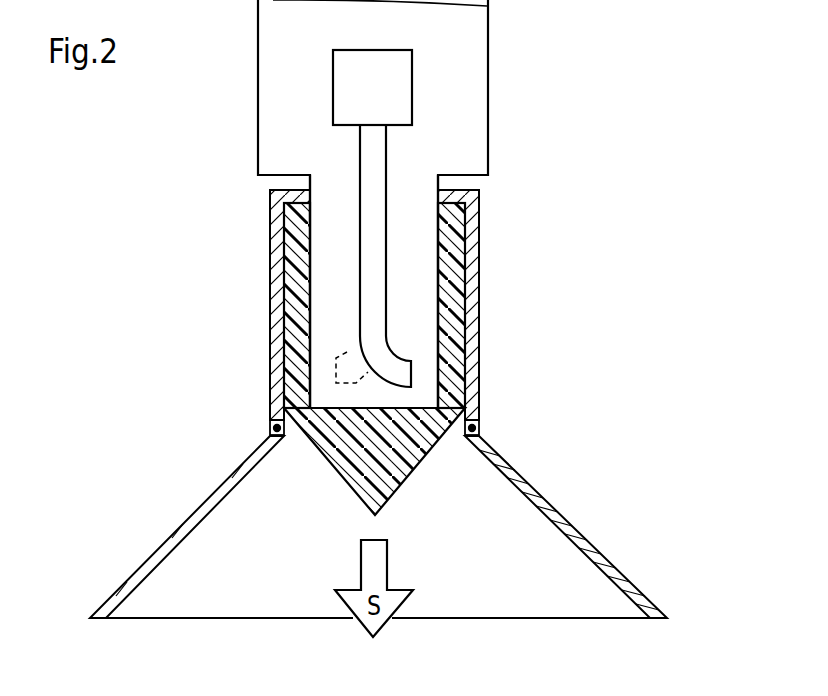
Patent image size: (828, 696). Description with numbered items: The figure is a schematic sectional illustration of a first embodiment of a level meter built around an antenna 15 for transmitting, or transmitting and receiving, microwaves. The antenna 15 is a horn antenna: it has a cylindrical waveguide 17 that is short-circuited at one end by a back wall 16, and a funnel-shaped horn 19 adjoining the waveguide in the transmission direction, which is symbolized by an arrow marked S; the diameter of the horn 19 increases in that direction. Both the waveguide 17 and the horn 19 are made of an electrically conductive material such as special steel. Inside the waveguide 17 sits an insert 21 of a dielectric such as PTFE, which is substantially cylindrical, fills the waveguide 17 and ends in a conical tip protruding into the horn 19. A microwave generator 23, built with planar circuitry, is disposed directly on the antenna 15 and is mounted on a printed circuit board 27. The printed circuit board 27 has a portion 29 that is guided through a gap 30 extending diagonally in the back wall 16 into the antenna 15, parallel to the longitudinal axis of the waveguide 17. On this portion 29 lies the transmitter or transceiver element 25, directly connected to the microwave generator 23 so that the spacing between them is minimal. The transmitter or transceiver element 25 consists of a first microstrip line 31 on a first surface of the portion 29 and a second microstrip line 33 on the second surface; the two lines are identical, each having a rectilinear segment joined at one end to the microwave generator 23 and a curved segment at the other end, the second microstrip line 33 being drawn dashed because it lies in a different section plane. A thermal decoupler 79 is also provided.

The antenna 15 is at (583, 383).
The back wall 16 is at (287, 191).
The cylindrical waveguide 17 is at (468, 333).
The funnel-shaped horn 19 is at (597, 547).
The insert 21 is at (405, 482).
The microwave generator 23 is at (397, 80).
The transmitter or transceiver element 25 is at (395, 282).
The printed circuit board 27 is at (468, 117).
The portion 29 is at (340, 283).
The gap 30 is at (447, 185).
The first microstrip line 31 is at (368, 147).
The second microstrip line 33 is at (320, 366).
The thermal decoupler 79 is at (270, 428).